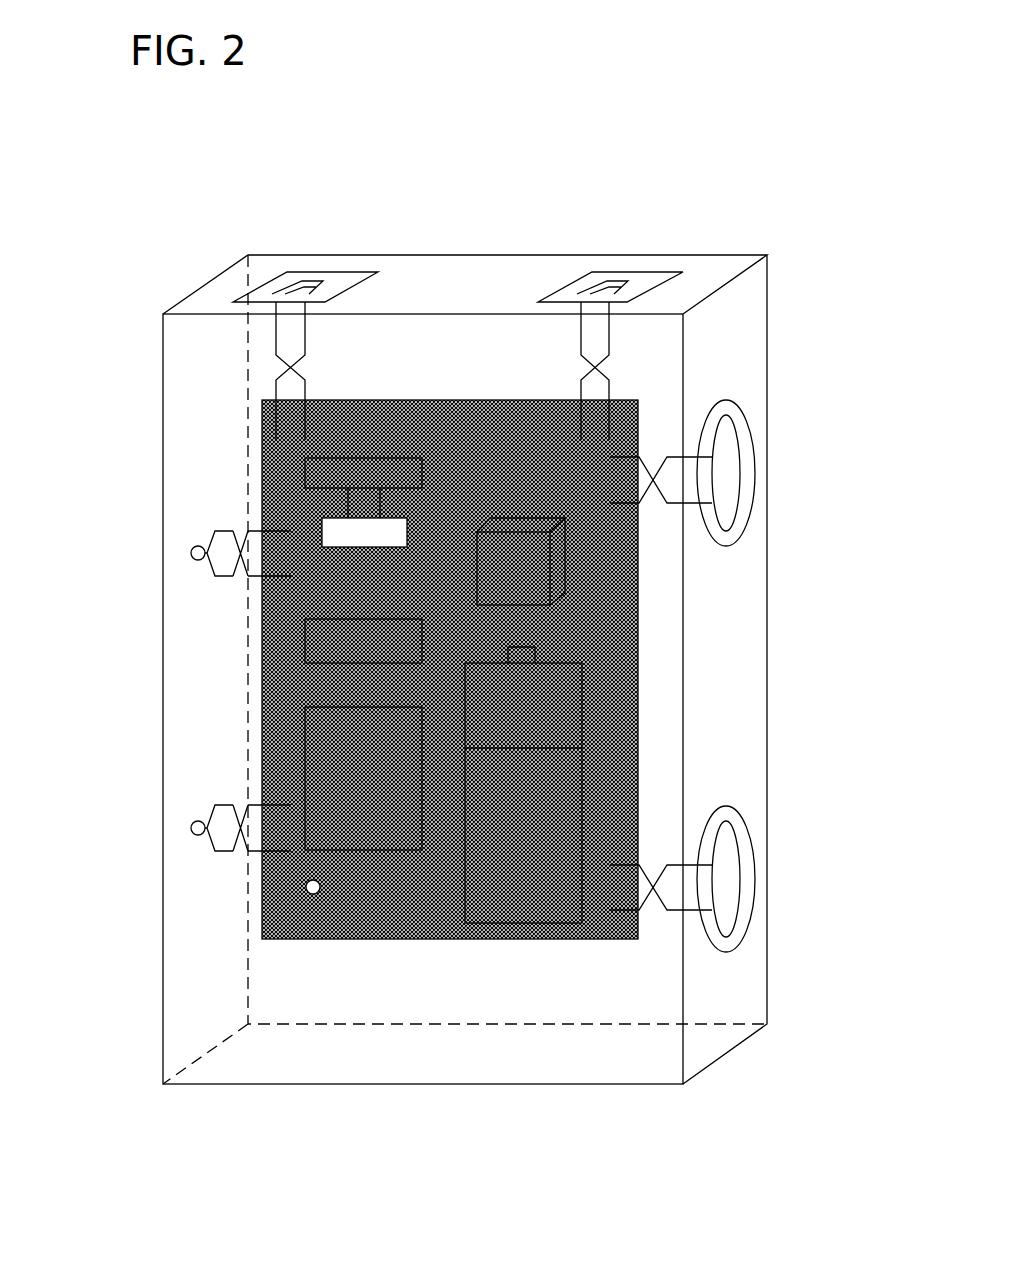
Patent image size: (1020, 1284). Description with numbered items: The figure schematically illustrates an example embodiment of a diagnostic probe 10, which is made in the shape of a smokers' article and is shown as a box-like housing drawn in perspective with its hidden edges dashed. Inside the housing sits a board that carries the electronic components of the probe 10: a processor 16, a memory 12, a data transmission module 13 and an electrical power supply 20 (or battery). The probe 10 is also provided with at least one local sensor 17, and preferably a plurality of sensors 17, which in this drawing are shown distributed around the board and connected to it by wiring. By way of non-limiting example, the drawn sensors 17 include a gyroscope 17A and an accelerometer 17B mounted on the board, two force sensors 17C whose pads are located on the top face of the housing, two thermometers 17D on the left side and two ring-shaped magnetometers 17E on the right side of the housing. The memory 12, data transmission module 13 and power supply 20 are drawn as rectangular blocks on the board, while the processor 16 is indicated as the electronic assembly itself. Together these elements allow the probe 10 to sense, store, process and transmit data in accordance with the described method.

The probe 10 is at (740, 152).
The memory 12 is at (303, 735).
The data transmission module 13 is at (384, 458).
The processor 16 is at (378, 855).
The local sensor 17 is at (460, 565).
The gyroscope 17A is at (303, 645).
The accelerometer 17B is at (568, 578).
The force sensor 17C is at (315, 280).
The thermometer 17D is at (203, 571).
The magnetometer 17E is at (756, 418).
The electrical power supply 20 is at (530, 923).